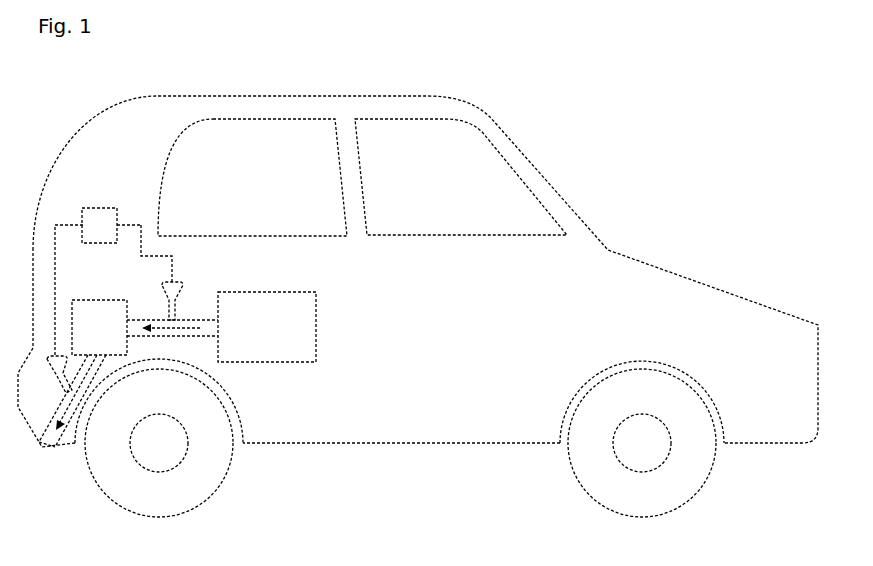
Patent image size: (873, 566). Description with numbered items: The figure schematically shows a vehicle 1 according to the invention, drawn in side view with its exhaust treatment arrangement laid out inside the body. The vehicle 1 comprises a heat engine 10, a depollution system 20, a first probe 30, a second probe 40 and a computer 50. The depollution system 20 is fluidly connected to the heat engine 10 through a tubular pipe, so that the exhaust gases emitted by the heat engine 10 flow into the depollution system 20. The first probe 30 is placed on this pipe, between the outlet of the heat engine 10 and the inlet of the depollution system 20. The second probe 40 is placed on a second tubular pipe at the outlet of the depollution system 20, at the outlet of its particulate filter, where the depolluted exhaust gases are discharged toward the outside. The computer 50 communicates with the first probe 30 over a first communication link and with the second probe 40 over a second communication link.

The vehicle 1 is at (570, 181).
The heat engine 10 is at (267, 327).
The depollution system 20 is at (128, 373).
The first probe 30 is at (181, 284).
The second probe 40 is at (60, 309).
The computer 50 is at (111, 225).